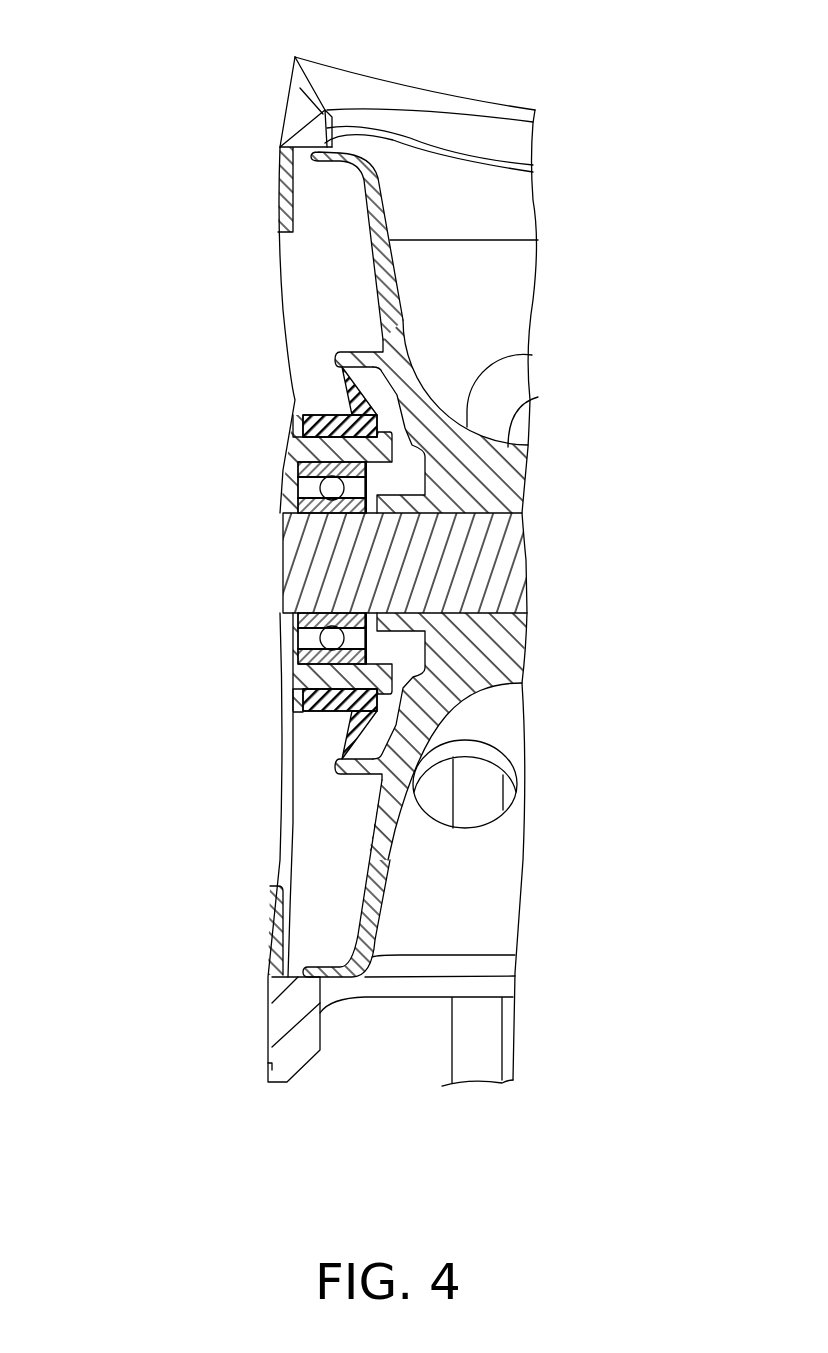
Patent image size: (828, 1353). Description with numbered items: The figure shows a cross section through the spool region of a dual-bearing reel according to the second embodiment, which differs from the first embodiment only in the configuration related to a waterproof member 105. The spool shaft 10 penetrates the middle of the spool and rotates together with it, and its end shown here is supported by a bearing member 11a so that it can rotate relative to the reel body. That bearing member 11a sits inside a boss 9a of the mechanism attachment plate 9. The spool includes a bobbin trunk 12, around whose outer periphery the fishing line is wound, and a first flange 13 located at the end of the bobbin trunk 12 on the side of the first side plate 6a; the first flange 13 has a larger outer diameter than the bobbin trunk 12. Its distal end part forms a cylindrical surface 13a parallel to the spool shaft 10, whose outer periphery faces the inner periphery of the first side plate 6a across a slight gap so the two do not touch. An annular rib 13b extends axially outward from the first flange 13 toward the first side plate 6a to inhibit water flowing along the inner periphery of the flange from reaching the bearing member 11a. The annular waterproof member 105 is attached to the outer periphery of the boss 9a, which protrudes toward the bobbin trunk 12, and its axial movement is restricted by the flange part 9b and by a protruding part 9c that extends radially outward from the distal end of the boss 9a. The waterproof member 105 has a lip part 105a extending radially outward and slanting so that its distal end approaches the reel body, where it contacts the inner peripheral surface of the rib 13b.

The first side plate 6a is at (297, 97).
The mechanism attachment plate 9 is at (283, 197).
The boss 9a is at (310, 447).
The flange part 9b is at (320, 423).
The protruding part 9c is at (397, 400).
The spool shaft 10 is at (487, 557).
The bearing member 11a is at (310, 490).
The bobbin trunk 12 is at (517, 410).
The first flange 13 is at (380, 193).
The cylindrical surface 13a is at (320, 107).
The rib 13b is at (338, 352).
The waterproof member 105 is at (323, 413).
The lip part 105a is at (350, 380).